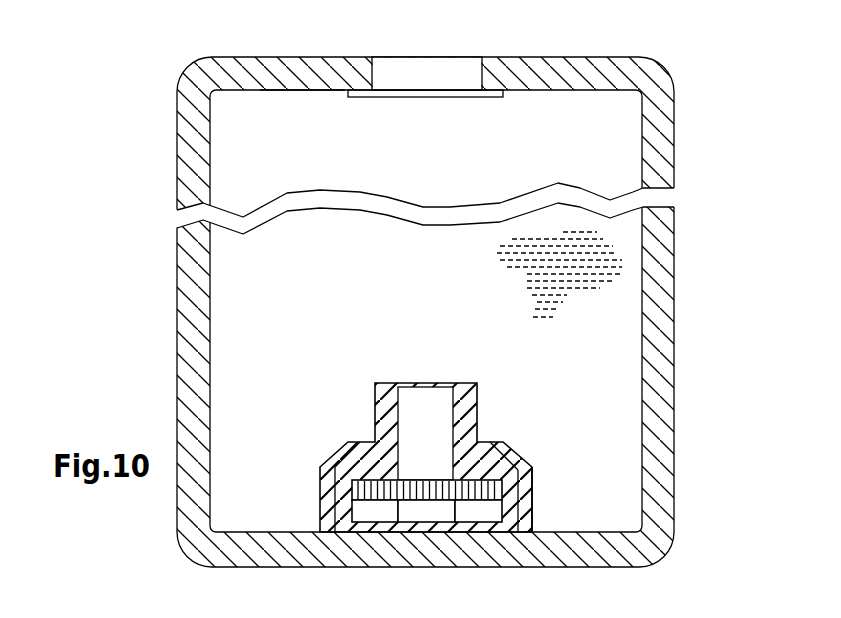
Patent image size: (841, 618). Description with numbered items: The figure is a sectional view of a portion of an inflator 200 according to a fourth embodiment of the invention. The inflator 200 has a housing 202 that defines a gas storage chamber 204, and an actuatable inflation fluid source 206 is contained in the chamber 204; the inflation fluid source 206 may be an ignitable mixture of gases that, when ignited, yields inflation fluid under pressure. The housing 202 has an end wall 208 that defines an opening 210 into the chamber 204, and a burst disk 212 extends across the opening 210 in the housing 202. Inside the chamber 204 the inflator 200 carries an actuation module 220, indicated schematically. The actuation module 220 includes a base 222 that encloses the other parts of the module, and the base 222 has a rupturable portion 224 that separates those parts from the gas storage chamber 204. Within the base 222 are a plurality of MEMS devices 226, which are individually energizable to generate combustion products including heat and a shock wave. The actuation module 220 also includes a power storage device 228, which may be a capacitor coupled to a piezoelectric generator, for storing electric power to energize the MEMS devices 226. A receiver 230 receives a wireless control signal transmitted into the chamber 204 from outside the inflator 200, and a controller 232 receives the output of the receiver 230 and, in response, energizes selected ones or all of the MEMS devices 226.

The inflator 200 is at (375, 312).
The housing 202 is at (167, 285).
The gas storage chamber 204 is at (325, 283).
The actuatable inflation fluid source 206 is at (547, 270).
The end wall 208 is at (300, 93).
The opening 210 is at (372, 76).
The burst disk 212 is at (433, 97).
The actuation module 220 is at (518, 467).
The base 222 is at (532, 502).
The rupturable portion 224 is at (432, 384).
The MEMS devices 226 is at (418, 490).
The power storage device 228 is at (372, 513).
The receiver 230 is at (480, 512).
The controller 232 is at (430, 512).